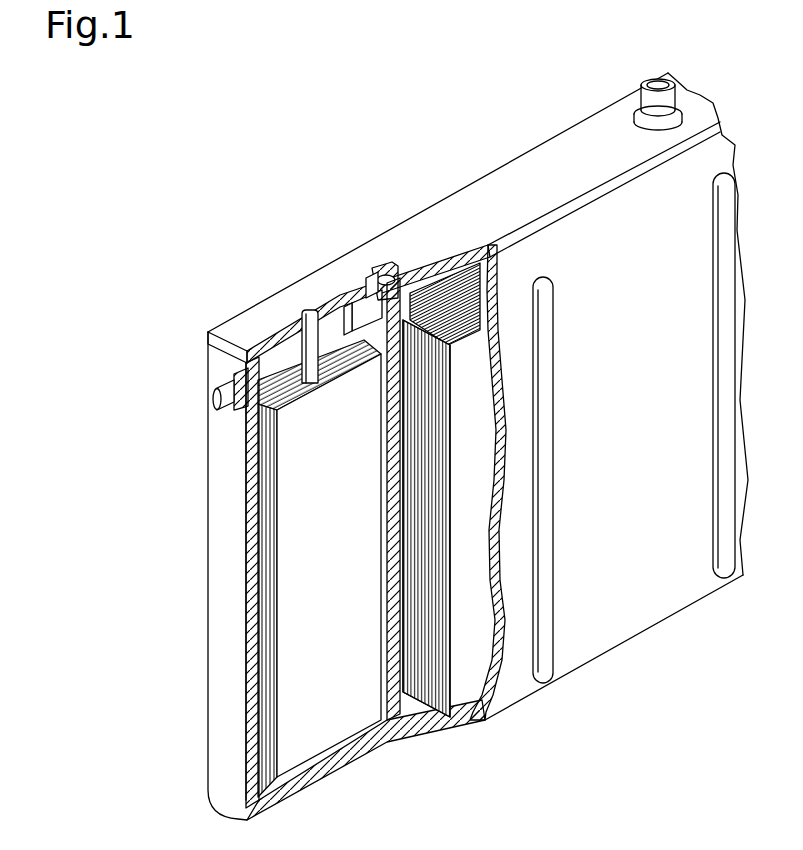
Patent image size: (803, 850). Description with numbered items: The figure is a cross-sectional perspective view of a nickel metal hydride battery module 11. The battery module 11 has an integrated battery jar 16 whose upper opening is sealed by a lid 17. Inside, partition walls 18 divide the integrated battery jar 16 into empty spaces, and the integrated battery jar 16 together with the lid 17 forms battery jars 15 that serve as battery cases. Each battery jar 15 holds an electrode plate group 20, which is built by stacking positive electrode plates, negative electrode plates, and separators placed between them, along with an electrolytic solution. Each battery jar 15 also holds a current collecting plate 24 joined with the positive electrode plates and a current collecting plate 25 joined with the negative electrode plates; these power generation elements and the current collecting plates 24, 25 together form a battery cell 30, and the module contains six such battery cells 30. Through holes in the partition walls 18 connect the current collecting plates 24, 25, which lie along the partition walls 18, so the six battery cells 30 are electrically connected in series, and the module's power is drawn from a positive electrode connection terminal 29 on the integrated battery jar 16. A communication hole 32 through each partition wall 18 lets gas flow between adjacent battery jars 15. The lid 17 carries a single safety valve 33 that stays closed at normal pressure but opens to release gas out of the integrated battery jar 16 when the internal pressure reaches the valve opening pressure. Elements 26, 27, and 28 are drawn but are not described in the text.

The battery module 11 is at (213, 519).
The battery jar 15 is at (447, 241).
The integrated battery jar 16 is at (641, 625).
The lid 17 is at (553, 146).
The partition wall 18 is at (402, 387).
The electrode plate group 20 is at (312, 738).
The current collecting plate 24 is at (232, 346).
The current collecting plate 25 is at (355, 278).
The current collector block 26 is at (378, 315).
The gasket 27 is at (418, 262).
The insulating member 28 is at (380, 274).
The positive electrode connection terminal 29 is at (214, 398).
The battery cell 30 is at (317, 527).
The communication hole 32 is at (367, 280).
The safety valve 33 is at (643, 78).